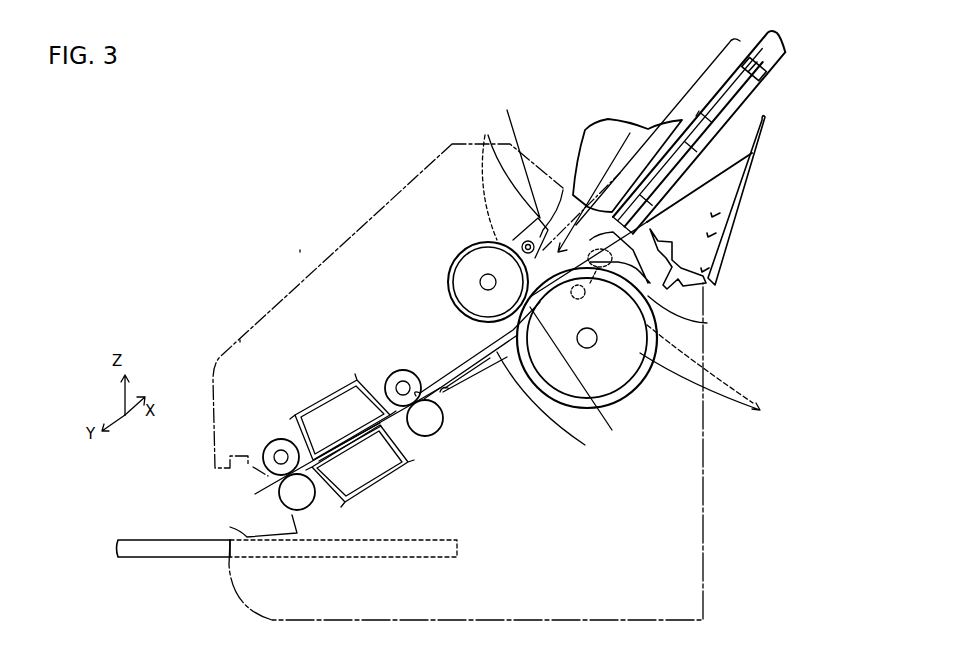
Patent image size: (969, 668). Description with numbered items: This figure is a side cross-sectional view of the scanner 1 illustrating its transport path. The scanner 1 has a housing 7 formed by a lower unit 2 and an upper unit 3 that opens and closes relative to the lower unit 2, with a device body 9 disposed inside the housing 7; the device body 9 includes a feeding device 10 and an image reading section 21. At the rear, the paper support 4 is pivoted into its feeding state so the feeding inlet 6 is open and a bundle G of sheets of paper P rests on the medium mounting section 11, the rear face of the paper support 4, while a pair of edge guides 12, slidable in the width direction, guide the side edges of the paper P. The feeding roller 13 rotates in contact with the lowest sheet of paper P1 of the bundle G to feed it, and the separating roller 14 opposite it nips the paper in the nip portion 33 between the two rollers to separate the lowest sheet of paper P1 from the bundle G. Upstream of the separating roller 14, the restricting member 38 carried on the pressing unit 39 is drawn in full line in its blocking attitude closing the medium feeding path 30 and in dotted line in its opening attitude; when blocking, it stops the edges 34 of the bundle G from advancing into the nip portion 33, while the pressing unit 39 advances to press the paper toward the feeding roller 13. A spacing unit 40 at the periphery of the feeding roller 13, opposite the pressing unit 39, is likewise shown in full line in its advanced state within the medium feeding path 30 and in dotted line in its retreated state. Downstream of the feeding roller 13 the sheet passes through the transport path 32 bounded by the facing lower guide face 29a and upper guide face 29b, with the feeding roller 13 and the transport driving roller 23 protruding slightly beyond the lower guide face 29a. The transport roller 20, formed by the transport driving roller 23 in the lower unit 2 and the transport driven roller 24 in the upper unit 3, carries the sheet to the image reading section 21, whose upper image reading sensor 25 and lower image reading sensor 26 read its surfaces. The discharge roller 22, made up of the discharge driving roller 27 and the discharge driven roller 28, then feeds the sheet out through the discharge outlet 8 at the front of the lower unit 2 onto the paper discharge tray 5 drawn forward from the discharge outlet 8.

The scanner 1 is at (361, 129).
The lower unit 2 is at (700, 495).
The upper unit 3 is at (300, 283).
The paper support 4 is at (752, 105).
The paper discharge tray 5 is at (150, 539).
The feeding inlet 6 is at (566, 160).
The housing 7 is at (503, 329).
The discharge outlet 8 is at (231, 509).
The device body 9 is at (557, 503).
The feeding device 10 is at (382, 257).
The medium mounting section 11 is at (759, 86).
The edge guides 12 is at (597, 130).
The feeding roller 13 is at (630, 397).
The separating roller 14 is at (450, 268).
The transport roller 20 is at (438, 387).
The image reading section 21 is at (353, 433).
The discharge roller 22 is at (315, 461).
The transport driving roller 23 is at (446, 432).
The transport driven roller 24 is at (390, 375).
The upper image reading sensor 25 is at (337, 410).
The lower image reading sensor 26 is at (352, 473).
The discharge driving roller 27 is at (307, 510).
The discharge driven roller 28 is at (275, 440).
The lower guide face 29a is at (555, 422).
The upper guide face 29b is at (447, 365).
The medium feeding path 30 is at (707, 323).
The transport path 32 is at (382, 385).
The nip portion 33 is at (580, 400).
The edges 34 is at (507, 110).
The restricting member 38 is at (485, 135).
The pressing unit 39 is at (525, 236).
The spacing unit 40 is at (709, 377).
The bundle of sheets of paper G is at (670, 112).
The sheet of paper P is at (655, 225).
The lowest sheet of paper P1 is at (682, 205).